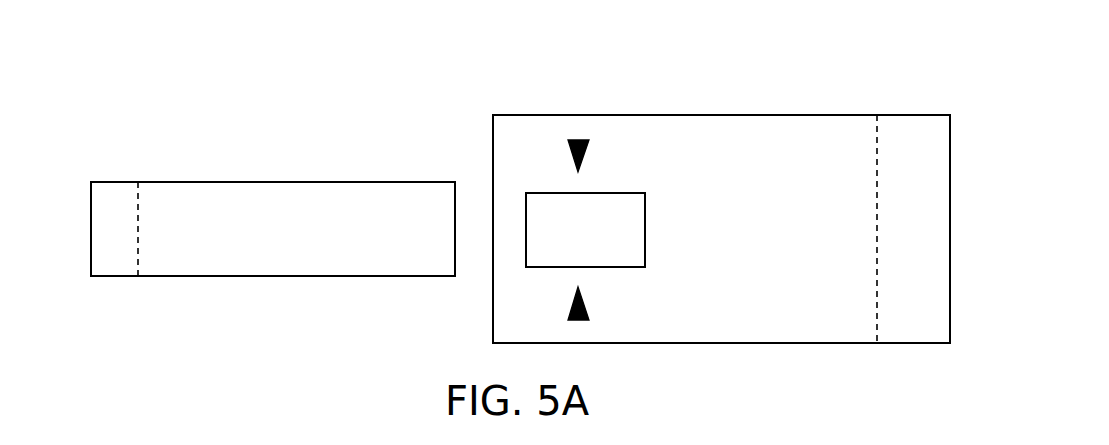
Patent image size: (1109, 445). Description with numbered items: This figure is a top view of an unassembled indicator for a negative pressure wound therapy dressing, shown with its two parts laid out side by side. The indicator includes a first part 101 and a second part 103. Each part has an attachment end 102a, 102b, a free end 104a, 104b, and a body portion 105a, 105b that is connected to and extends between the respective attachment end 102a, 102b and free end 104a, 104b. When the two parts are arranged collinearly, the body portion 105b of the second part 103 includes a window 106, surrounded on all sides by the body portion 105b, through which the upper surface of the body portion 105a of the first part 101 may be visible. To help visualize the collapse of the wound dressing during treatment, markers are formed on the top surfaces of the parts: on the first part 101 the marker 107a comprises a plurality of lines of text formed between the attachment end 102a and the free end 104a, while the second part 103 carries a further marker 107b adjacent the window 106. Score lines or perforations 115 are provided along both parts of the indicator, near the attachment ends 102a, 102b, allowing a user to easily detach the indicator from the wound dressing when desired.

The first part 101 is at (168, 182).
The attachment end 102a is at (90, 260).
The attachment end 102b is at (950, 293).
The second part 103 is at (840, 115).
The free end 104a is at (455, 200).
The free end 104b is at (493, 297).
The body portion 105a is at (279, 258).
The body portion 105b is at (718, 133).
The window 106 is at (645, 215).
The marker 107a is at (410, 195).
The marker 107b is at (578, 140).
The score lines or perforations 115 is at (140, 245).